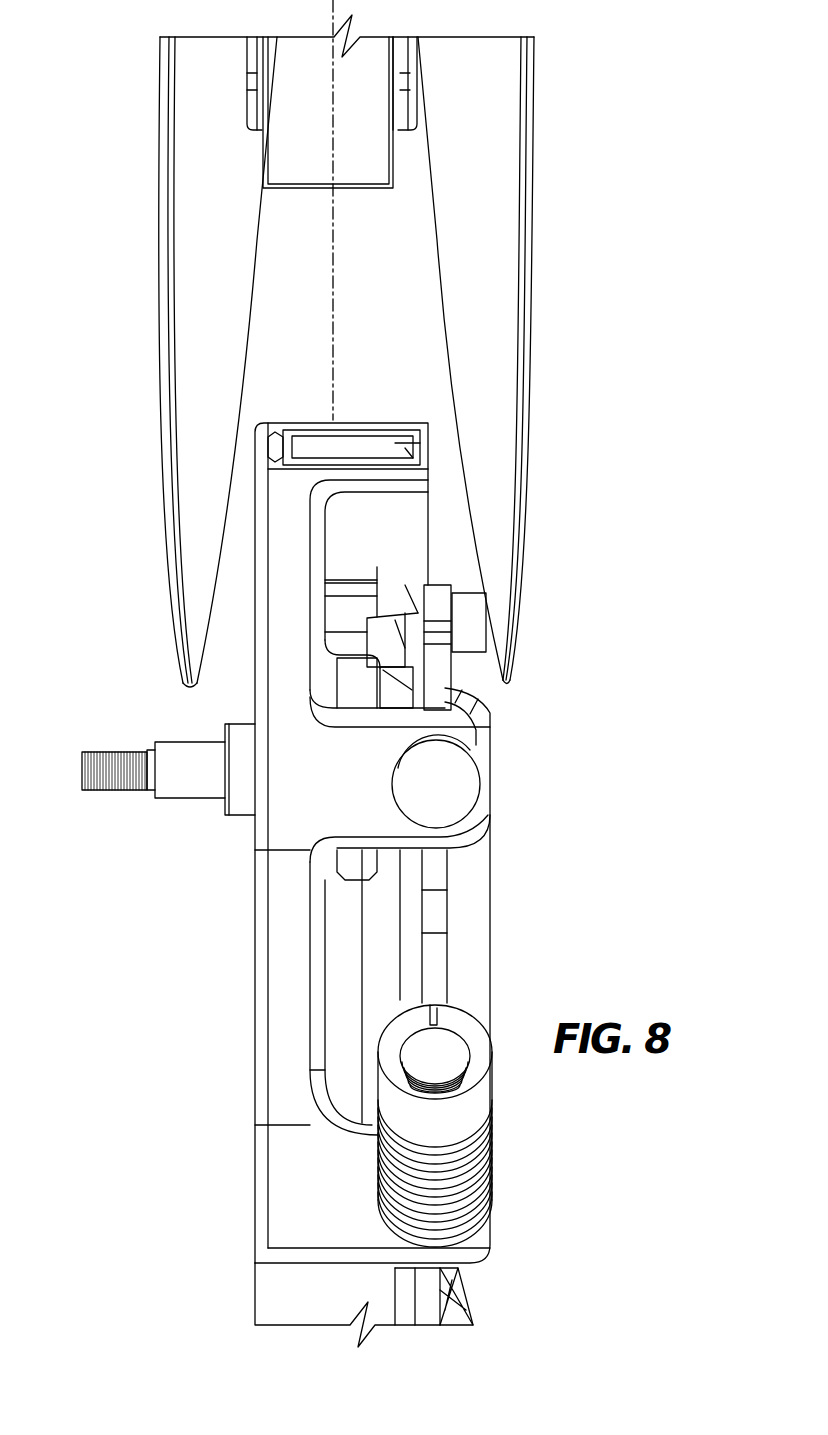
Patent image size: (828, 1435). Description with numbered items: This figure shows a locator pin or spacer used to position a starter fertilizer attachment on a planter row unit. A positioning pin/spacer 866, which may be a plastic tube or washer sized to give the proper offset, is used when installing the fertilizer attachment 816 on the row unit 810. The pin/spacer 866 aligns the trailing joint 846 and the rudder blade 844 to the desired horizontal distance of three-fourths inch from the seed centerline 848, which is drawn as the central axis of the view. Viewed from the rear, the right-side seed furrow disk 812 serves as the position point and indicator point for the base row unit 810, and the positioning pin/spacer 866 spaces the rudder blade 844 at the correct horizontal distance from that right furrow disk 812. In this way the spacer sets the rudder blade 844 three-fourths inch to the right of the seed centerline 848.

The row unit 810 is at (572, 157).
The seed furrow disk 812 is at (150, 410).
The seed centerline 848 is at (333, 255).
The fertilizer attachment 816 is at (192, 853).
The positioning pin/spacer 866 is at (469, 660).
The trailing joint 846 is at (448, 788).
The rudder blade 844 is at (432, 970).